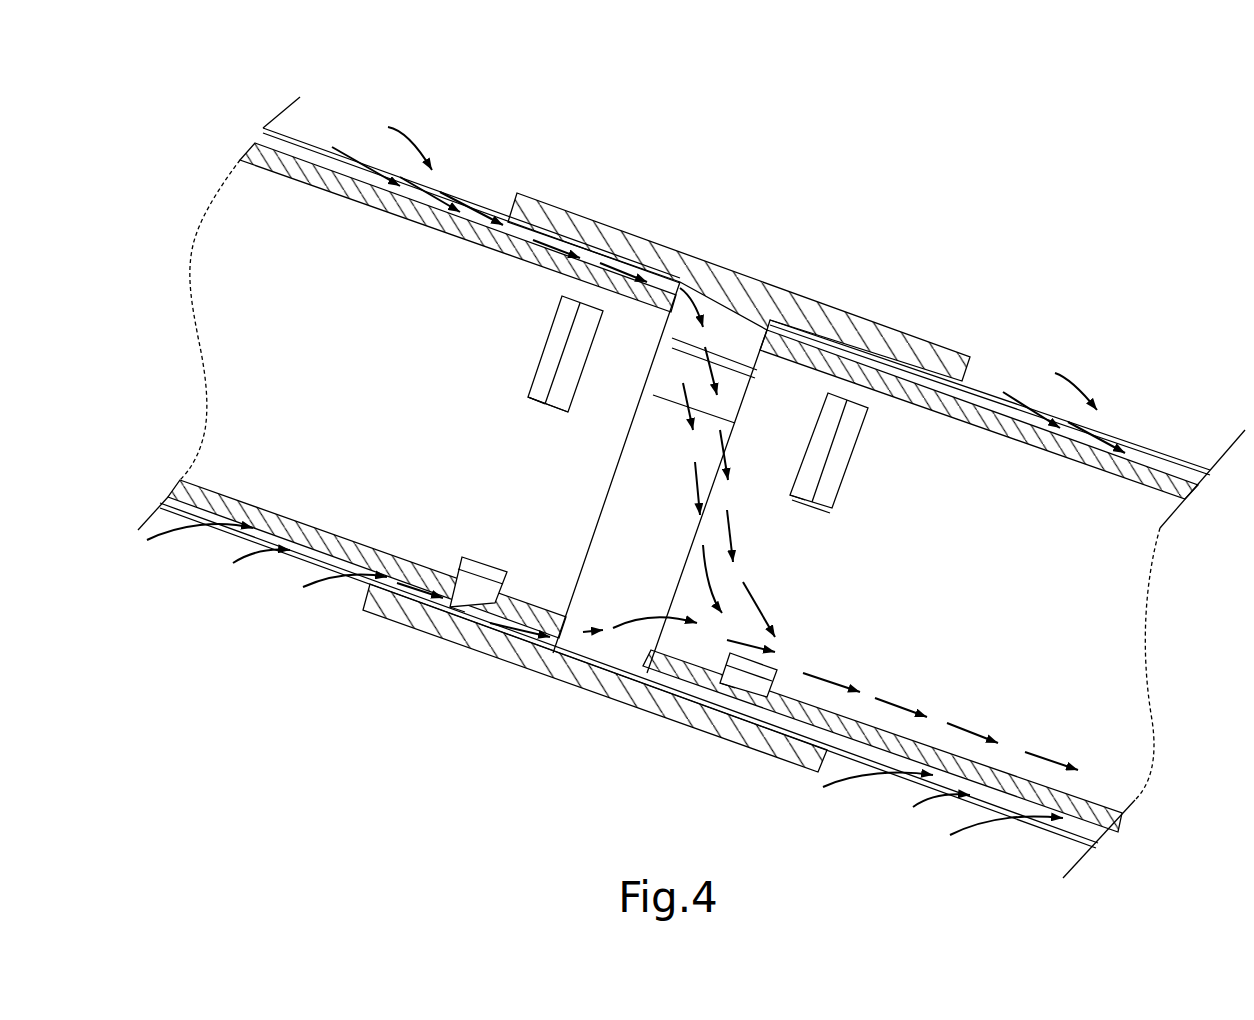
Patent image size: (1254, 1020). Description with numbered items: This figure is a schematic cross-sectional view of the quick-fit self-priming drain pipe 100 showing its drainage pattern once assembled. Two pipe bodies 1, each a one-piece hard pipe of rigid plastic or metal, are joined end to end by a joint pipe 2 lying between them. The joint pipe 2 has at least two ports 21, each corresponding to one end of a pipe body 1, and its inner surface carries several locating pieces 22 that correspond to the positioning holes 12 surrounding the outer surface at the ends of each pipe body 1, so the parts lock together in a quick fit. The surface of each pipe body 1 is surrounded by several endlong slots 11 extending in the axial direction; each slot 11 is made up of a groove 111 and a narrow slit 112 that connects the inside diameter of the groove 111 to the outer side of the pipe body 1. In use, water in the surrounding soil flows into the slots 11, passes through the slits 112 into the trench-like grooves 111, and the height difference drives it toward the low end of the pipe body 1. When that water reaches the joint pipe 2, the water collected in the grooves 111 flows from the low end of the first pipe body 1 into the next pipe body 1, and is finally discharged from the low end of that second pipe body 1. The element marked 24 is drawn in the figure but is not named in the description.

The quick-fit self-priming drain pipe 100 is at (666, 441).
The pipe body 1 is at (691, 441).
The slot 11 is at (695, 488).
The groove 111 is at (1215, 460).
The slit 112 is at (1158, 452).
The joint pipe 2 is at (672, 472).
The port 21 is at (508, 222).
The locating piece 22 is at (548, 412).
The rib 24 is at (667, 390).
The positioning hole 12 is at (555, 316).